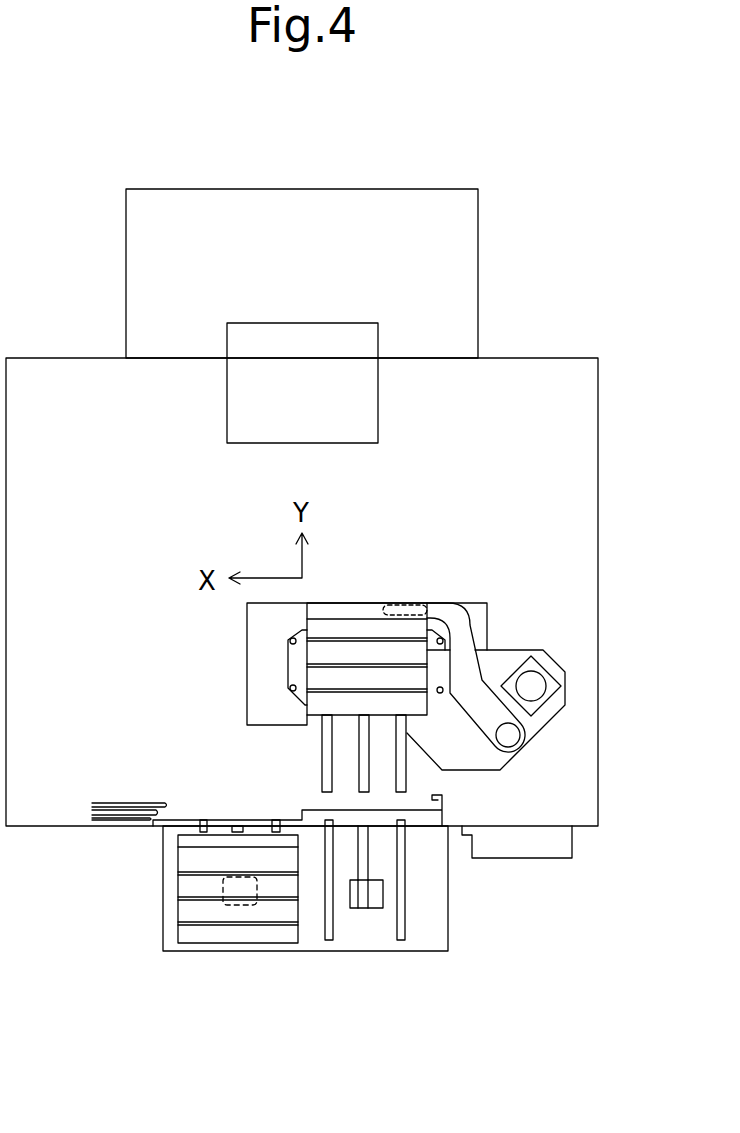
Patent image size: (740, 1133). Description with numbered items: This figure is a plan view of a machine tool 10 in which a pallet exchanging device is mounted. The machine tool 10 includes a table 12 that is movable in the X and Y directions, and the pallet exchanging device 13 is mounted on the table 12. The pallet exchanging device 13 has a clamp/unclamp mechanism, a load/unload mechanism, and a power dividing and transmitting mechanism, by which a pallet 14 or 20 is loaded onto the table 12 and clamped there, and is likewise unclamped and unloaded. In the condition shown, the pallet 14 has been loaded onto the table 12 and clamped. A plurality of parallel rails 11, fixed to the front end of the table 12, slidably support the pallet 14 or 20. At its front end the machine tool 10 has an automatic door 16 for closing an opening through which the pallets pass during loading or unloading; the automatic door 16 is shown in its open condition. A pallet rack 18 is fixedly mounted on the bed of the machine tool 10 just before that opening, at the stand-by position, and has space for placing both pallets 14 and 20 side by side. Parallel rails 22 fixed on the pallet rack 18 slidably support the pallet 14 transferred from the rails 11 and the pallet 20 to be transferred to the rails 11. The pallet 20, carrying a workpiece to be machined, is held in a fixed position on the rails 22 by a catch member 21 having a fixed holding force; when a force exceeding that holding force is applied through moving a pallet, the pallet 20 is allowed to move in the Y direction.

The machine tool 10 is at (568, 289).
The parallel rails 11 is at (400, 767).
The table 12 is at (258, 627).
The pallet exchanging device 13 is at (502, 663).
The pallet 14 is at (393, 656).
The automatic door 16 is at (135, 815).
The pallet rack 18 is at (432, 922).
The pallet 20 is at (208, 910).
The catch member 21 is at (245, 892).
The parallel rails 22 is at (398, 882).